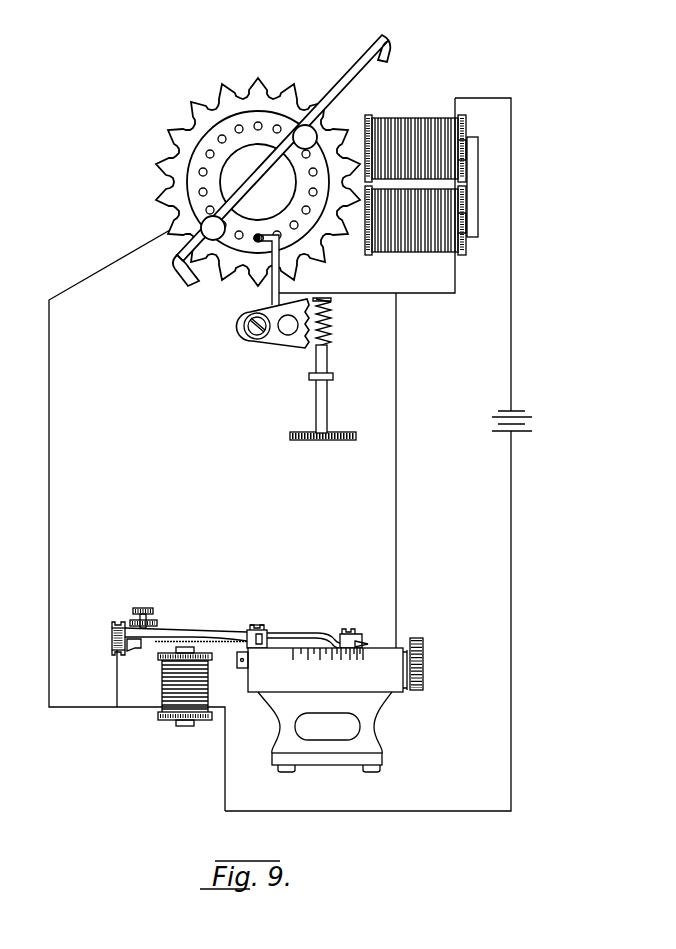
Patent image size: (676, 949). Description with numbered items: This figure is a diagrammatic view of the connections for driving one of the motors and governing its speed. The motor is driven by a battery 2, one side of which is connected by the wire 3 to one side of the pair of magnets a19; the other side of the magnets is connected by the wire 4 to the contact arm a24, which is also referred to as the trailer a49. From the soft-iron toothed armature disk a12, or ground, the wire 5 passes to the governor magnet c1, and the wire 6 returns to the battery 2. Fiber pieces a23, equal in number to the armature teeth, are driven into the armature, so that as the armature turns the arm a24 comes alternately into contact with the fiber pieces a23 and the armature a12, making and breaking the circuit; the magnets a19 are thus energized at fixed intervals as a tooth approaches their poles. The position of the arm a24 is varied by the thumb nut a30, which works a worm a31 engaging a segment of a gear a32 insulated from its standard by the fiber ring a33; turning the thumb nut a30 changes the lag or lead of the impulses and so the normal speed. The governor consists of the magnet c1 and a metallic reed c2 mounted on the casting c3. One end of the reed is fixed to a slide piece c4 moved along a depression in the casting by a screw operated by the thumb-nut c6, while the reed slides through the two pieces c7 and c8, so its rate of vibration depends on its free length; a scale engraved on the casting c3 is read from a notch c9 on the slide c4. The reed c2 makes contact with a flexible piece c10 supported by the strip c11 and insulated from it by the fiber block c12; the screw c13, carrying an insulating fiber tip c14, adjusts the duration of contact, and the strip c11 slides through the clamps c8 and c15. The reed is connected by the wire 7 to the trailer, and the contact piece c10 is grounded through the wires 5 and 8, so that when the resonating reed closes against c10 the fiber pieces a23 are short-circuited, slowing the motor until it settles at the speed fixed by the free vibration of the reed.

The toothed armature disk a12 is at (172, 126).
The fiber pieces a23 is at (199, 172).
The thumb nut a30 is at (290, 462).
The trailer a49 is at (373, 58).
The magnets a19 is at (454, 200).
The contact arm a24 is at (273, 293).
The worm a31 is at (331, 323).
The segment of a gear a32 is at (281, 341).
The fiber ring a33 is at (250, 331).
The battery 2 is at (528, 424).
The wire 3 is at (514, 285).
The wire 4 is at (360, 294).
The wire 5 is at (49, 368).
The wire 6 is at (513, 676).
The wire 7 is at (396, 546).
The wire 8 is at (118, 684).
The magnet c1 is at (168, 716).
The metallic reed c2 is at (295, 641).
The casting c3 is at (372, 731).
The slide piece c4 is at (365, 647).
The thumb-nut c6 is at (424, 666).
The clamp piece c7 is at (252, 640).
The clamp piece c8 is at (258, 634).
The notch c9 is at (363, 644).
The flexible contact piece c10 is at (157, 650).
The strip c11 is at (285, 636).
The fiber block c12 is at (112, 634).
The screw c13 is at (150, 591).
The fiber tip c14 is at (131, 646).
The clamp c15 is at (268, 630).